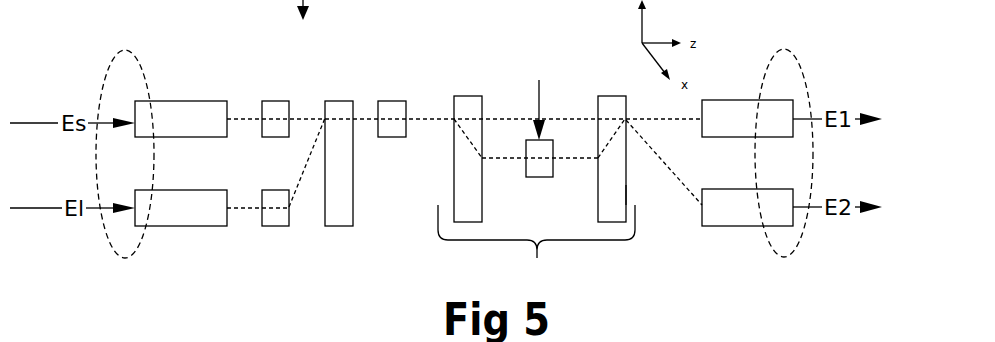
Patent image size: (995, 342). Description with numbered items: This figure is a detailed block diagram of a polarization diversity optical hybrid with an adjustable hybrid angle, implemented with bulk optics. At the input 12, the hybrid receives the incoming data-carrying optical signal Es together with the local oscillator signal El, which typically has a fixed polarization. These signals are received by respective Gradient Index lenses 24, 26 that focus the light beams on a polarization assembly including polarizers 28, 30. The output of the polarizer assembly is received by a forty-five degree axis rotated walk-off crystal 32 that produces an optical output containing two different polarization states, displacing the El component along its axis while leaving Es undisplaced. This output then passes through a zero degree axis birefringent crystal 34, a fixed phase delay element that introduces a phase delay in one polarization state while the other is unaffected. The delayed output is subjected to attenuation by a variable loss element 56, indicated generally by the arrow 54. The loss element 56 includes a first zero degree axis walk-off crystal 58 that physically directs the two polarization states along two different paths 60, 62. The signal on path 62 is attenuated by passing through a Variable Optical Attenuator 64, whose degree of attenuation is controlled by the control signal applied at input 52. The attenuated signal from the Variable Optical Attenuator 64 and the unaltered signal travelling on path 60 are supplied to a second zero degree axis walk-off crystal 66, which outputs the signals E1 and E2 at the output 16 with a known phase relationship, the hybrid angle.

The input 12 is at (125, 50).
The output 16 is at (784, 49).
The Gradient Index (GRIN) lens 24 is at (206, 100).
The Gradient Index (GRIN) lens 26 is at (216, 226).
The polarizer 28 is at (275, 100).
The polarizer 30 is at (278, 226).
The 45 degree axis rotated walk-off crystal 32 is at (342, 226).
The 0 degree axis birefringent crystal 34 is at (389, 100).
The control signal input 52 is at (533, 112).
The optical hybrid unit 54 is at (443, 50).
The loss element 56 is at (536, 249).
The first 0 degree axis walk-off crystal 58 is at (468, 96).
The path 60 is at (581, 118).
The path 62 is at (500, 160).
The Variable Optical Attenuator (VOA) 64 is at (540, 178).
The second 0 degree axis walk-off crystal 66 is at (652, 175).